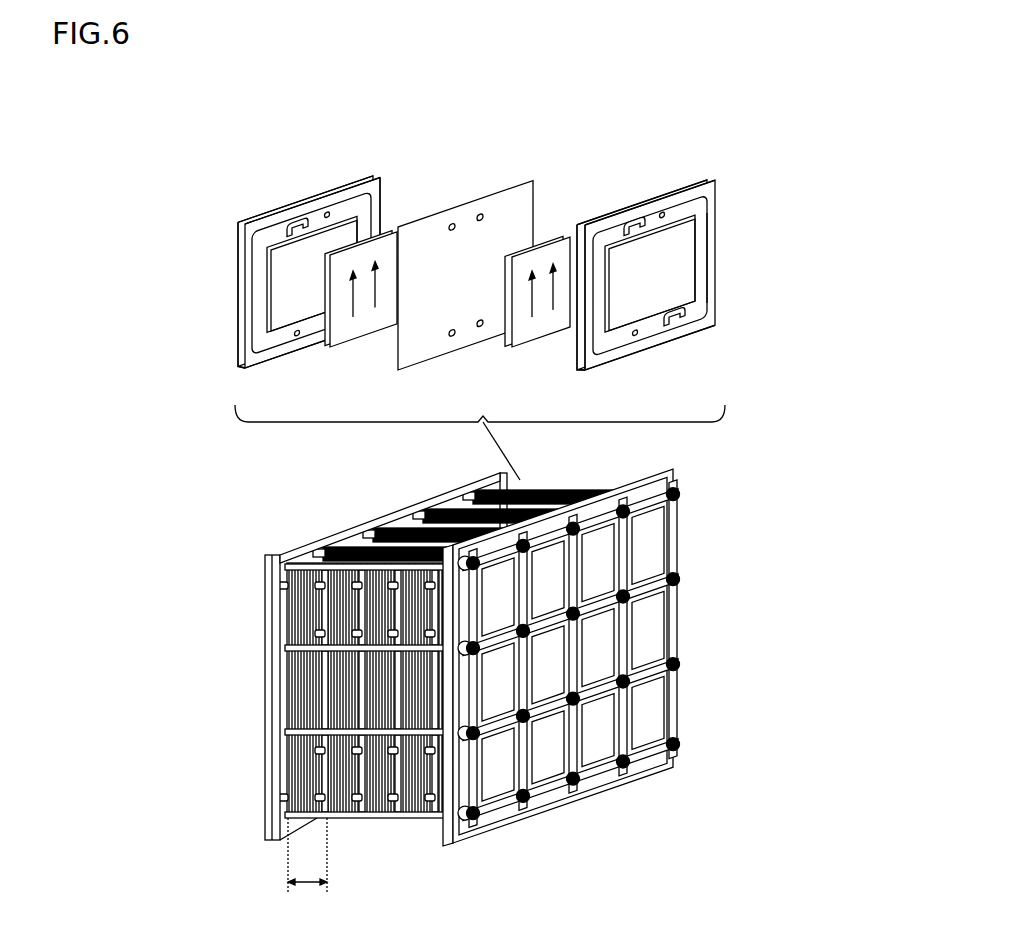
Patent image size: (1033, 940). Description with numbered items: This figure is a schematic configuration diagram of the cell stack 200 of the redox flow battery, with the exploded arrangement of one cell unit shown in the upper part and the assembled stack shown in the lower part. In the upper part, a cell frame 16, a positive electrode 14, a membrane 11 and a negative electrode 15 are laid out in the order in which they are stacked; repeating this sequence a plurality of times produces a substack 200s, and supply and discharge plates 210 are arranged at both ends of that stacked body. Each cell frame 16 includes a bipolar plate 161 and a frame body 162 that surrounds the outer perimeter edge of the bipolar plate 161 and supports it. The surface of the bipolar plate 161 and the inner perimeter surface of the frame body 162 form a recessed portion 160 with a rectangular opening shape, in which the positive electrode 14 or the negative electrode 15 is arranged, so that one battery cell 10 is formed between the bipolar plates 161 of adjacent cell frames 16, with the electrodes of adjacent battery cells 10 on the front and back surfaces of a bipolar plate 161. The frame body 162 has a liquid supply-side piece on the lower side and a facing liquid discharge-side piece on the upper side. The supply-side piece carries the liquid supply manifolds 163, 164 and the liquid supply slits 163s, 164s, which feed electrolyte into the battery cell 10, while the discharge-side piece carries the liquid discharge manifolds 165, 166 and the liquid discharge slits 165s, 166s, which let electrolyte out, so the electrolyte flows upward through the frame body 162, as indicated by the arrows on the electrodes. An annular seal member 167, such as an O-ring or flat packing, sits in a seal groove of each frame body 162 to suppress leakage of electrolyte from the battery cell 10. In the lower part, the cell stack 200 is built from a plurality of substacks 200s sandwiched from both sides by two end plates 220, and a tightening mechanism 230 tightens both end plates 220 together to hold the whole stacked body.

The battery cell 10 is at (480, 238).
The membrane 11 is at (490, 195).
The positive electrode 14 is at (362, 335).
The negative electrode 15 is at (526, 333).
The cell frame 16 is at (160, 300).
The recessed portion 160 is at (342, 238).
The bipolar plate 161 is at (264, 335).
The frame body 162 is at (238, 296).
The liquid supply manifold 163 is at (696, 331).
The liquid supply slit 163s is at (709, 318).
The liquid supply manifold 164 is at (300, 356).
The liquid supply slit 164s is at (240, 359).
The liquid discharge manifold 165 is at (292, 208).
The liquid discharge slit 165s is at (250, 231).
The liquid discharge manifold 166 is at (300, 222).
The liquid discharge slit 166s is at (333, 208).
The seal member 167 is at (372, 205).
The cell stack 200 is at (480, 696).
The substack 200s is at (307, 872).
The supply and discharge plate 210 is at (287, 697).
The end plate 220 is at (265, 578).
The tightening mechanism 230 is at (400, 522).